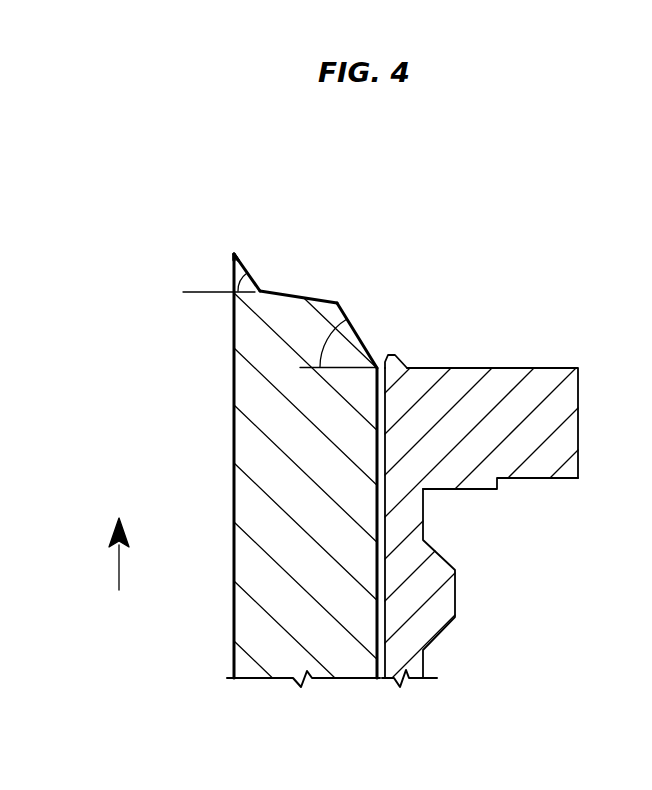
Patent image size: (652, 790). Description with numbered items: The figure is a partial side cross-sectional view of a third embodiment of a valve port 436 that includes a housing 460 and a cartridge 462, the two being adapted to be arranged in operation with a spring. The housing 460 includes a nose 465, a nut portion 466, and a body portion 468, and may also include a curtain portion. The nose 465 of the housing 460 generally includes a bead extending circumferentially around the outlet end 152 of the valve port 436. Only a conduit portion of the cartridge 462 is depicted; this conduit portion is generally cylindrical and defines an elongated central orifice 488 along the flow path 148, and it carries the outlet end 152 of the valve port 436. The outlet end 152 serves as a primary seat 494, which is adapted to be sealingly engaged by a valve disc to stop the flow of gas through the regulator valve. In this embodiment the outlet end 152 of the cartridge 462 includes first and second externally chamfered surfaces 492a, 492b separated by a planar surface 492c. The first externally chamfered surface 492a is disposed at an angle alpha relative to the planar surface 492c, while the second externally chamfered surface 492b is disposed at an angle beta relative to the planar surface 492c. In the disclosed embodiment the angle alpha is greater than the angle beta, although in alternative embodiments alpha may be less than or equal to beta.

The valve port 436 is at (196, 234).
The cartridge 462 is at (259, 600).
The elongated central orifice 488 is at (234, 452).
The outlet end 152 is at (233, 254).
The primary seat 494 is at (233, 254).
The second externally chamfered surface 492b is at (248, 276).
The planar surface 492c is at (297, 296).
The first externally chamfered surface 492a is at (357, 334).
The housing 460 is at (537, 393).
The nose 465 is at (405, 360).
The nut portion 466 is at (478, 474).
The body portion 468 is at (438, 622).
The flow path 148 is at (118, 565).